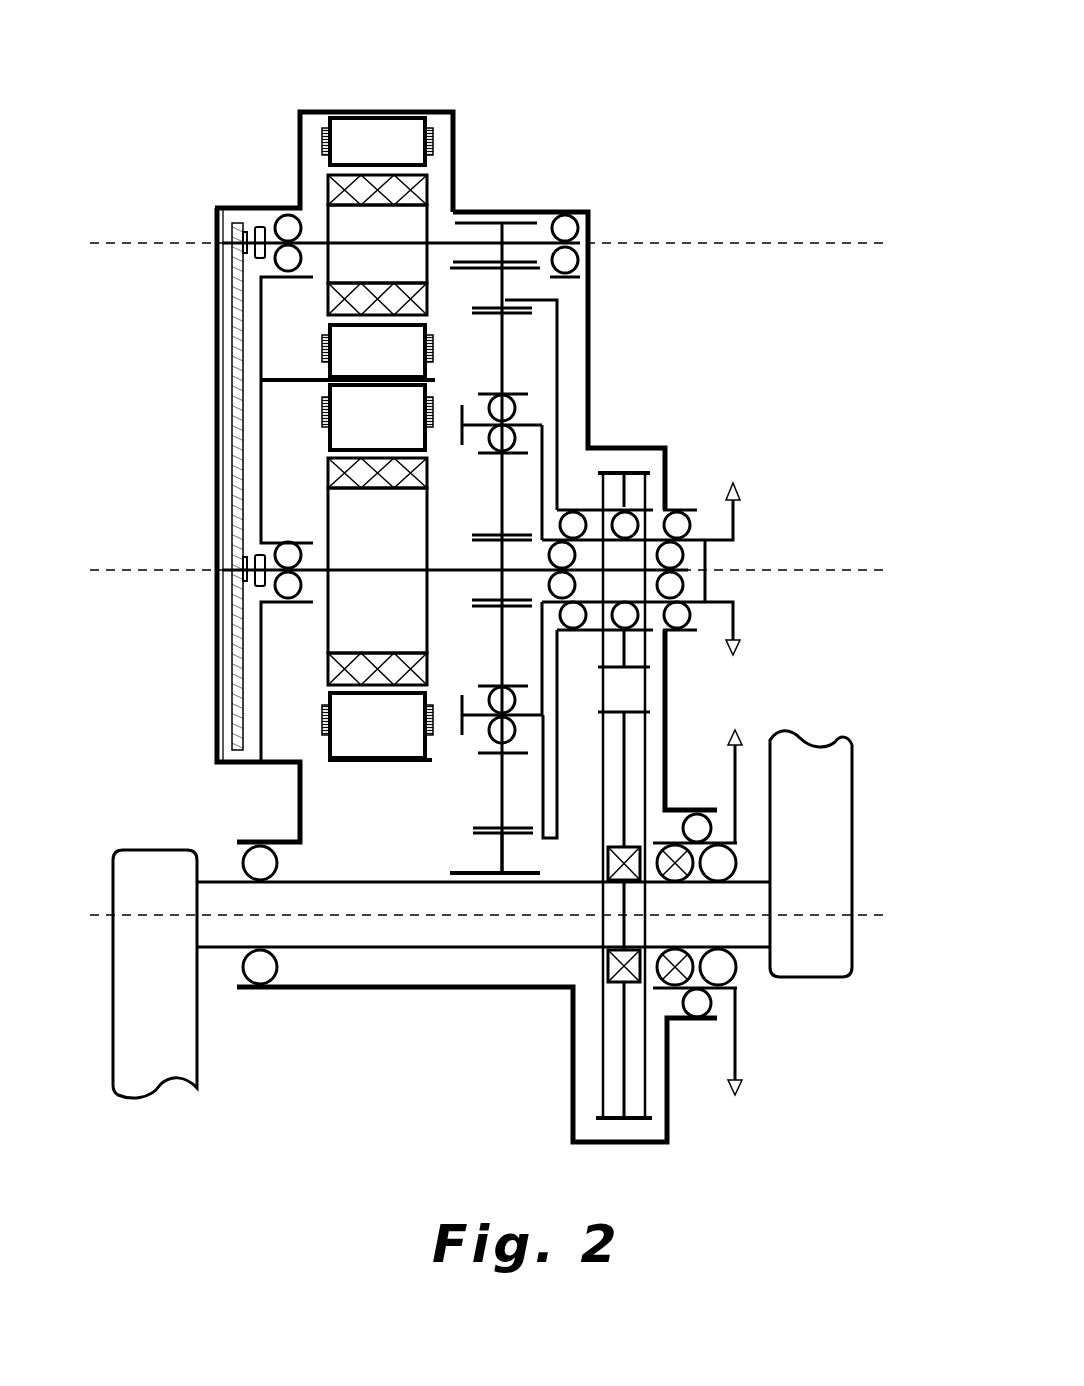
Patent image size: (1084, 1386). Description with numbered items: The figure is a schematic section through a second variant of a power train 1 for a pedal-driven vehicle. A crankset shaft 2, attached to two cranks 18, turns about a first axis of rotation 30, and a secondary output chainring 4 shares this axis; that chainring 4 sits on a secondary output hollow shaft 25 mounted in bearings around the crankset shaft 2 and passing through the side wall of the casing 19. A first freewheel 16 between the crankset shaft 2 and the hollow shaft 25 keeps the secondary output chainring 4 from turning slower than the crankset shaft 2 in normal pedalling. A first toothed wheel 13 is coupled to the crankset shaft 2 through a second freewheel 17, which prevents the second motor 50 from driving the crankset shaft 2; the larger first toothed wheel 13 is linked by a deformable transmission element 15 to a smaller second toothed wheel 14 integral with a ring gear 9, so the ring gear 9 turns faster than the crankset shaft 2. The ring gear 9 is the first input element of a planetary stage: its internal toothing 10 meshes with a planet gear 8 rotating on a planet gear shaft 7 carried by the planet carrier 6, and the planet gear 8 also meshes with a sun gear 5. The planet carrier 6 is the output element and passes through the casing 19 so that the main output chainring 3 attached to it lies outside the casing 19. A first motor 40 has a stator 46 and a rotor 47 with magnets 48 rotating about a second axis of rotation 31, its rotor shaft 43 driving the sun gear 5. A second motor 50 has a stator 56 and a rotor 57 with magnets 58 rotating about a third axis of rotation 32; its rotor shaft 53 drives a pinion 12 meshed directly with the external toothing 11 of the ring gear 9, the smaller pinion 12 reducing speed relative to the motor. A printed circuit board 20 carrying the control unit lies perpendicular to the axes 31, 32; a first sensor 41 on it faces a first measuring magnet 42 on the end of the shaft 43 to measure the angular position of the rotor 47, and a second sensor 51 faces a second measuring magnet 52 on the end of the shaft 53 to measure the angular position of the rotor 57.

The power train 1 is at (706, 173).
The crankset shaft 2 is at (353, 928).
The main output chainring 3 is at (737, 523).
The secondary output chainring 4 is at (733, 787).
The sun gear 5 is at (500, 583).
The planet carrier 6 is at (545, 482).
The planet gear shaft 7 is at (532, 420).
The planet gear 8 is at (505, 353).
The ring gear 9 is at (502, 853).
The internal toothing 10 is at (473, 830).
The external toothing 11 is at (528, 875).
The pinion 12 is at (527, 222).
The first toothed wheel 13 is at (623, 1050).
The second toothed wheel 14 is at (642, 490).
The deformable transmission element 15 is at (645, 1075).
The first freewheel 16 is at (665, 967).
The second freewheel 17 is at (607, 860).
The cranks 18 is at (157, 1005).
The casing 19 is at (593, 380).
The printed circuit board 20 is at (240, 323).
The secondary output hollow shaft 25 is at (667, 845).
The first axis of rotation 30 is at (878, 912).
The second axis of rotation 31 is at (820, 568).
The third axis of rotation 32 is at (817, 240).
The first motor 40 is at (327, 748).
The first sensor 41 is at (255, 555).
The first measuring magnet 42 is at (243, 558).
The shaft of the rotor 43 is at (441, 567).
The stator 46 is at (367, 723).
The rotor 47 is at (363, 632).
The magnets 48 is at (340, 665).
The second motor 50 is at (450, 110).
The second sensor 51 is at (243, 243).
The second measuring magnet 52 is at (260, 225).
The shaft of the rotor 53 is at (443, 248).
The stator 56 is at (392, 140).
The rotor 57 is at (405, 225).
The magnets 58 is at (427, 187).